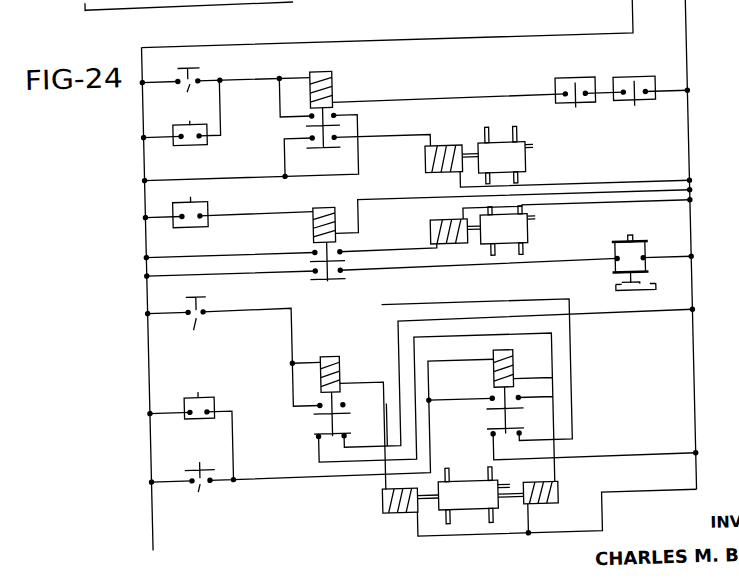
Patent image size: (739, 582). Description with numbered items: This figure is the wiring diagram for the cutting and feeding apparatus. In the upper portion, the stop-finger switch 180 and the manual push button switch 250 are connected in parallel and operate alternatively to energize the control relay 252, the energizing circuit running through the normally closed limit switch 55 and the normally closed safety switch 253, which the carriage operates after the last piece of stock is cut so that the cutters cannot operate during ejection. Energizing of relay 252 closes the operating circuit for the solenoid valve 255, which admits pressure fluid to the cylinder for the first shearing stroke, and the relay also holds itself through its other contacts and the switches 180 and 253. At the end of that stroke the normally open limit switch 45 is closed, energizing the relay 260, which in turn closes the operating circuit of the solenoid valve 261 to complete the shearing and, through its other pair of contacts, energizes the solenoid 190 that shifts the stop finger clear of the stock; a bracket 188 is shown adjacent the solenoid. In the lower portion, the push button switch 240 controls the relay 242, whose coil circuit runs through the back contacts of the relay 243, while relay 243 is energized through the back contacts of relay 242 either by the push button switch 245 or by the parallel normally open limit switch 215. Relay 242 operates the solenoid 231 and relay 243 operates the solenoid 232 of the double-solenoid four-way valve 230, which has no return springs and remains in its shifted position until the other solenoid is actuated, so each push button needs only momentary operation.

The push button switch 250 is at (179, 91).
The switch 180 is at (200, 141).
The control relay 252 is at (330, 69).
The limit switch 55 is at (577, 84).
The safety switch 253 is at (639, 84).
The solenoid valve 255 is at (473, 141).
The limit switch 45 is at (200, 223).
The relay 260 is at (328, 198).
The solenoid valve 261 is at (470, 255).
The solenoid 190 is at (615, 250).
The bracket 188 is at (617, 292).
The push button switch 240 is at (195, 328).
The relay 242 is at (331, 354).
The relay 243 is at (494, 354).
The limit switch 215 is at (194, 414).
The push button switch 245 is at (195, 493).
The solenoid 231 is at (378, 498).
The four-way valve 230 is at (462, 511).
The solenoid 232 is at (554, 492).